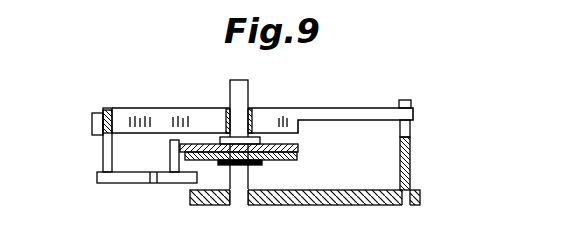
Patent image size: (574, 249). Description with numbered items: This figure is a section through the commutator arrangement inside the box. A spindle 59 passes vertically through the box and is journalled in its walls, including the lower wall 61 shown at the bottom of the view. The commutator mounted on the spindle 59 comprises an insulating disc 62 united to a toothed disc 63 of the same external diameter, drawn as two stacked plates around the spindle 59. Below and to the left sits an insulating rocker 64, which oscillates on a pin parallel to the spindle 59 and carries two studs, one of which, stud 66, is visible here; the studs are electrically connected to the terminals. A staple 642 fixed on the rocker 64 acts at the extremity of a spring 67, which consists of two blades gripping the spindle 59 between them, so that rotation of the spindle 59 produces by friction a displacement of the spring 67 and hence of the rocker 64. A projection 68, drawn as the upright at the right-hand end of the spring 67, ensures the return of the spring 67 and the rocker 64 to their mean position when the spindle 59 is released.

The spindle 59 is at (248, 88).
The lower wall 61 is at (300, 204).
The insulating disc 62 is at (292, 148).
The toothed disc 63 is at (297, 161).
The insulating rocker 64 is at (135, 178).
The staple 642 is at (103, 152).
The stud 66 is at (175, 158).
The spring 67 is at (290, 112).
The projection 68 is at (410, 150).